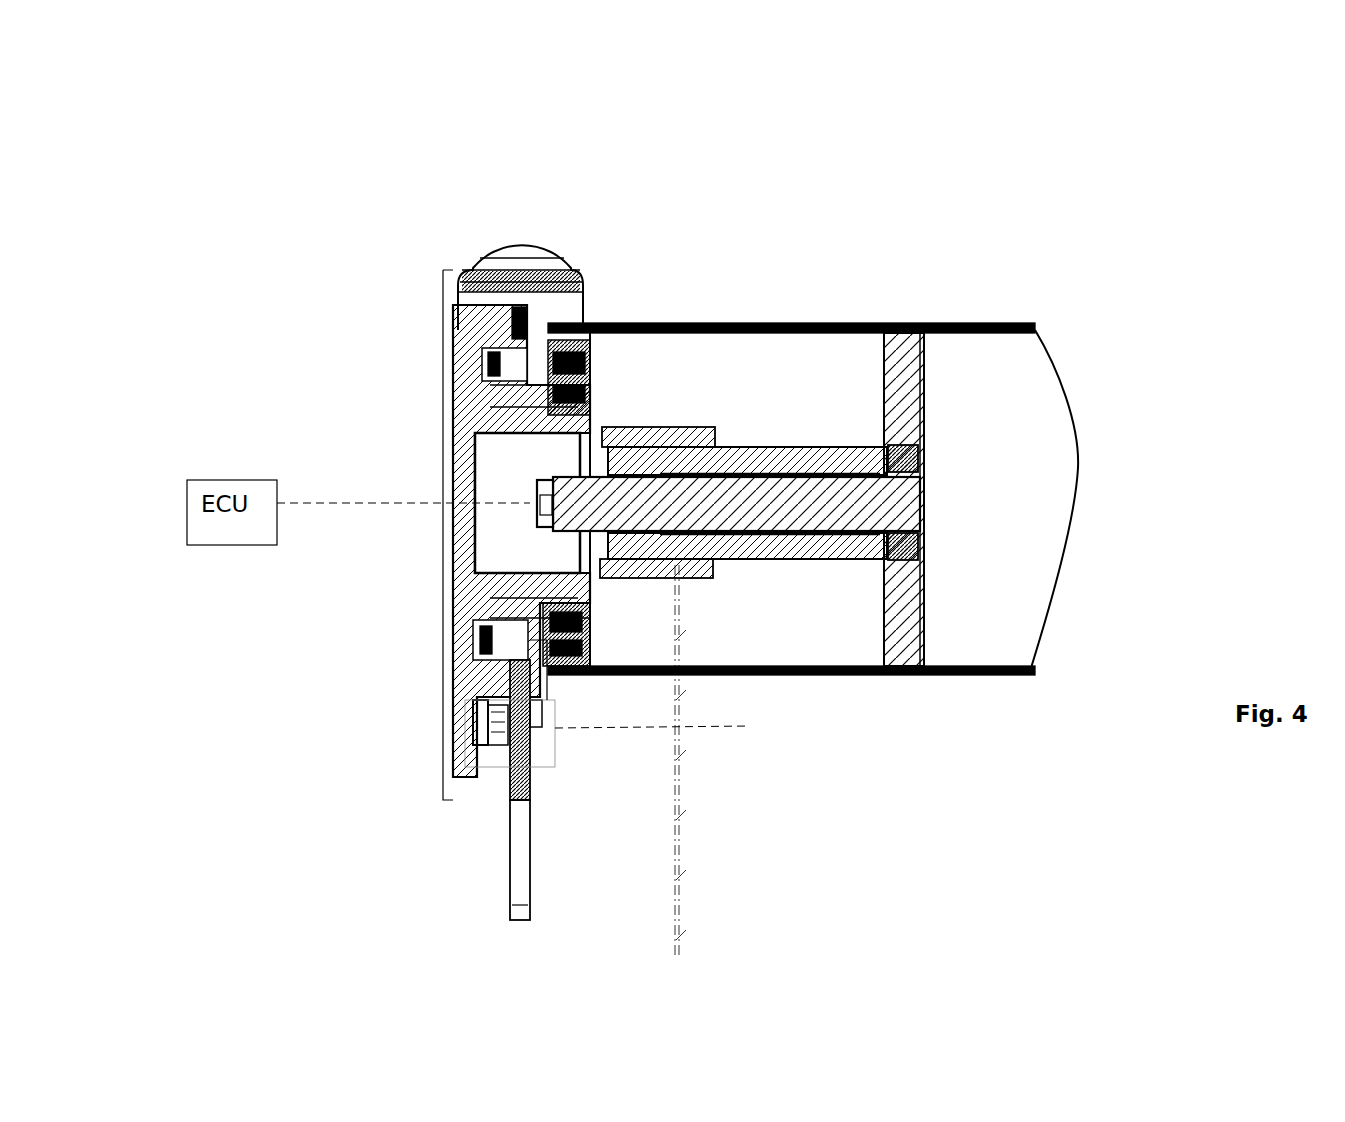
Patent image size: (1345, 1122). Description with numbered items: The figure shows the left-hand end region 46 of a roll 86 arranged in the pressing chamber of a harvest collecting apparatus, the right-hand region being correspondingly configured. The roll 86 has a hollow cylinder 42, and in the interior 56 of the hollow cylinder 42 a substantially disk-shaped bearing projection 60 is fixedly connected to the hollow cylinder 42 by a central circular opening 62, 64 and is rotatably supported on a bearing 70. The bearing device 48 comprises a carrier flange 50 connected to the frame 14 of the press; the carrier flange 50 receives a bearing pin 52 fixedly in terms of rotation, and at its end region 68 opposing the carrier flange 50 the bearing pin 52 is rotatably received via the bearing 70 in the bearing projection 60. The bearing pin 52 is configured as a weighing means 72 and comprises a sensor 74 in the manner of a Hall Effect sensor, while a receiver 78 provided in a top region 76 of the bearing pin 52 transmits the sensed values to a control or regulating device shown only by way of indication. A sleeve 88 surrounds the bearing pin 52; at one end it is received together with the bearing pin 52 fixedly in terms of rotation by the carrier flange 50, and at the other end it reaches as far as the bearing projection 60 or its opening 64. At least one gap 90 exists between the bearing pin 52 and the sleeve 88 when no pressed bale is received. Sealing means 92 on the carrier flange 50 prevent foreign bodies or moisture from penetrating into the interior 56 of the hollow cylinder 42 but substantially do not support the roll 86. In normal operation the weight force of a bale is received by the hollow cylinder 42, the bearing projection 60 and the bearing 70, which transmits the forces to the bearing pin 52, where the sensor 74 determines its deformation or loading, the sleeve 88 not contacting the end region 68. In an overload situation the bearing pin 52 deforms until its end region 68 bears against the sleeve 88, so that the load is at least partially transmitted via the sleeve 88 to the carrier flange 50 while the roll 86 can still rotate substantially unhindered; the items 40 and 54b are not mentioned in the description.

The frame 14 is at (450, 795).
The housing 40 is at (815, 325).
The hollow cylinder 42 is at (1000, 333).
The end region 46 is at (530, 203).
The bearing device 48 is at (698, 190).
The carrier flange 50 is at (453, 347).
The bearing pin 52 is at (755, 463).
The sleeve 54b is at (731, 421).
The interior 56 is at (844, 627).
The bearing projection 60 is at (937, 350).
The central circular opening 62 is at (556, 459).
The central circular opening 64 is at (933, 511).
The end region 68 is at (933, 438).
The bearing 70 is at (915, 570).
The weighing means 72 is at (757, 581).
The sensor 74 is at (521, 490).
The top region 76 is at (542, 537).
The receiver 78 is at (530, 500).
The roll 86 is at (710, 312).
The sleeve 88 is at (794, 447).
The gap 90 is at (873, 527).
The sealing means 92 is at (606, 346).